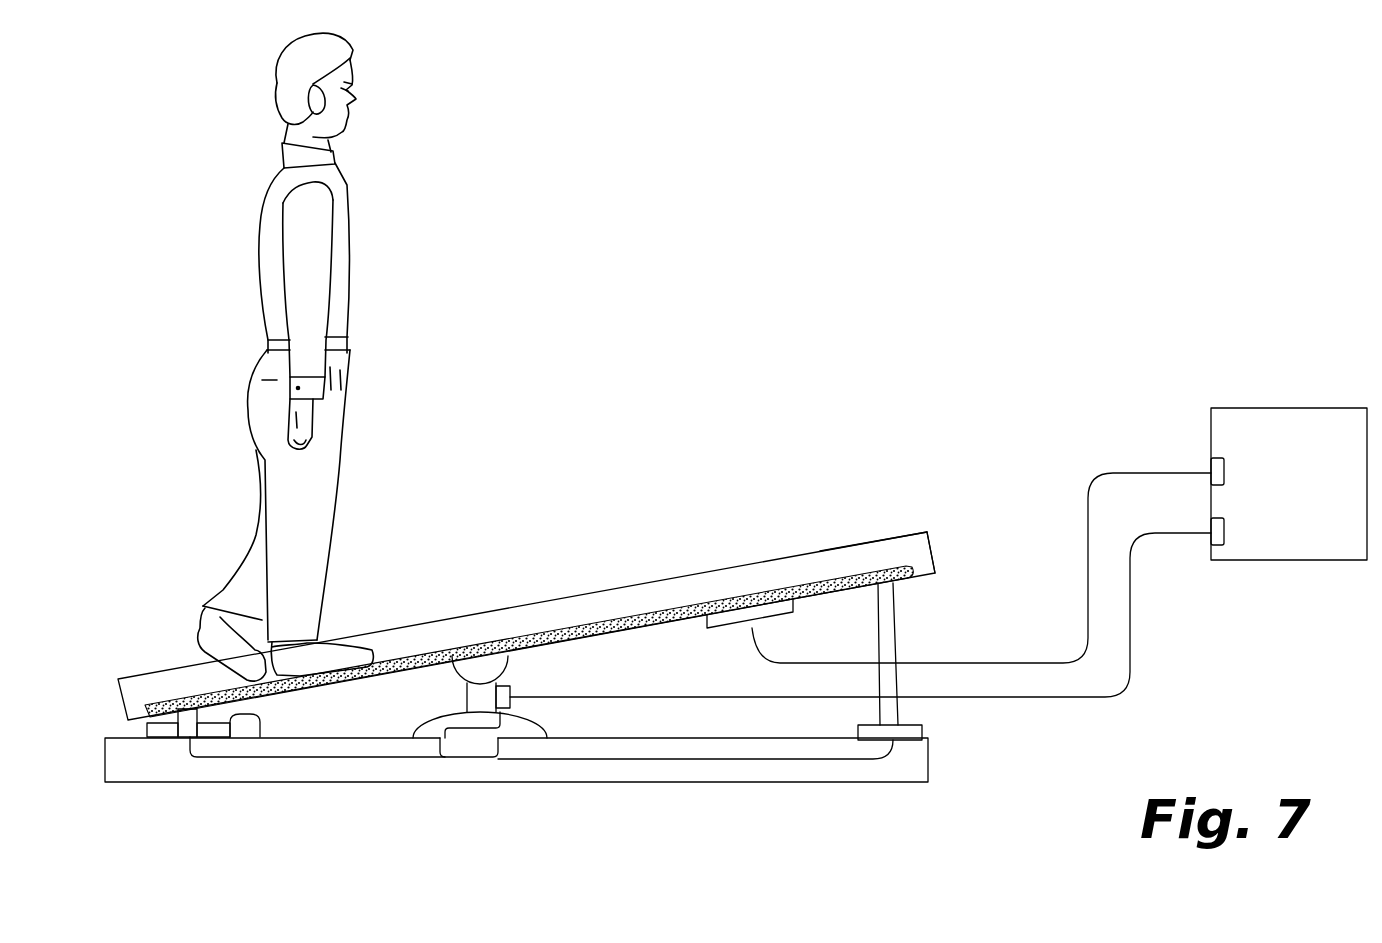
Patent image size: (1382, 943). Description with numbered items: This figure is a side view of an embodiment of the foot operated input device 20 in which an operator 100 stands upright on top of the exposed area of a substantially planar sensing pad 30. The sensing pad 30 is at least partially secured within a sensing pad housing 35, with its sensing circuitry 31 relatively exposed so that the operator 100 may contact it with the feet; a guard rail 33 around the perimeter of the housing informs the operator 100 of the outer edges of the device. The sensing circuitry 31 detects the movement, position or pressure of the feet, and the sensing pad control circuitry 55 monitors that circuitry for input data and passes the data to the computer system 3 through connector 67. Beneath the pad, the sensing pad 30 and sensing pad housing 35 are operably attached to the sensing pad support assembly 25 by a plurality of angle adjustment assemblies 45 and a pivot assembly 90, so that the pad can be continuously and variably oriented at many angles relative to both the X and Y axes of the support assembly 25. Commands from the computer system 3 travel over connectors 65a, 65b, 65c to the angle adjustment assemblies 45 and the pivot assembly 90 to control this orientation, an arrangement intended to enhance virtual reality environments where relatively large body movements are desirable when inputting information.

The operator 100 is at (262, 205).
The foot operated input device 20 is at (644, 611).
The sensing pad support assembly 25 is at (105, 783).
The sensing pad 30 is at (579, 580).
The sensing circuitry 31 is at (675, 605).
The guard rail 33 is at (930, 531).
The sensing pad housing 35 is at (948, 561).
The angle adjustment assembly 45 is at (249, 718).
The sensing pad control circuitry 55 is at (727, 615).
The pivot assembly 90 is at (513, 660).
The connector 65a is at (1075, 704).
The connector 65b is at (578, 764).
The connector 65c is at (391, 763).
The connector 67 is at (1150, 465).
The computer system 3 is at (1288, 407).